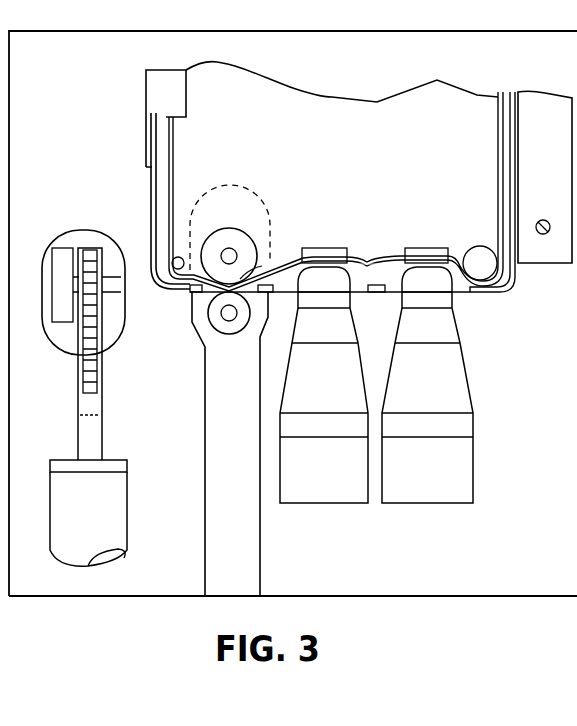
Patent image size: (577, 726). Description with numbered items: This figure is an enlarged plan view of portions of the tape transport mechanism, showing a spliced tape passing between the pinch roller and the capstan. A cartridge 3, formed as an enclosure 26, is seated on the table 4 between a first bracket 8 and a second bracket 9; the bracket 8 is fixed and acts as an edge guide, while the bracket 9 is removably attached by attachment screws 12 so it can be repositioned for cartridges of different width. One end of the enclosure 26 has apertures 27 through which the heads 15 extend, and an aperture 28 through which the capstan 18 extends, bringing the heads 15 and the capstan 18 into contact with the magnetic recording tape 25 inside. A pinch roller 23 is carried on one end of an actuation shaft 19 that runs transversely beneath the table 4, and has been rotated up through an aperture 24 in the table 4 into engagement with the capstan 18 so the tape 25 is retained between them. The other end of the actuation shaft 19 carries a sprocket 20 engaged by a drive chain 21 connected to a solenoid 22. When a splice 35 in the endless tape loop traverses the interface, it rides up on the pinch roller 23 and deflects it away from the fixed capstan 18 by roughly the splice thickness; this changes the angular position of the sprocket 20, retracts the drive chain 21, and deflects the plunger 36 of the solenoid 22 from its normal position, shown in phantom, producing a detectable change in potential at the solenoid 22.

The table 4 is at (56, 108).
The cartridge 3 is at (198, 82).
The first bracket 8 is at (162, 107).
The enclosure 26 is at (437, 123).
The second bracket 9 is at (550, 177).
The attachment screws 12 is at (543, 234).
The aperture 24 is at (243, 188).
The pinch roller 23 is at (245, 242).
The splice 35 is at (255, 272).
The magnetic recording tape 25 is at (372, 259).
The apertures 27 is at (394, 294).
The heads 15 is at (328, 393).
The capstan 18 is at (231, 335).
The aperture 28 is at (206, 298).
The actuation shaft 19 is at (110, 292).
The sprocket 20 is at (98, 318).
The drive chain 21 is at (106, 372).
The plunger 36 is at (88, 452).
The solenoid 22 is at (98, 527).